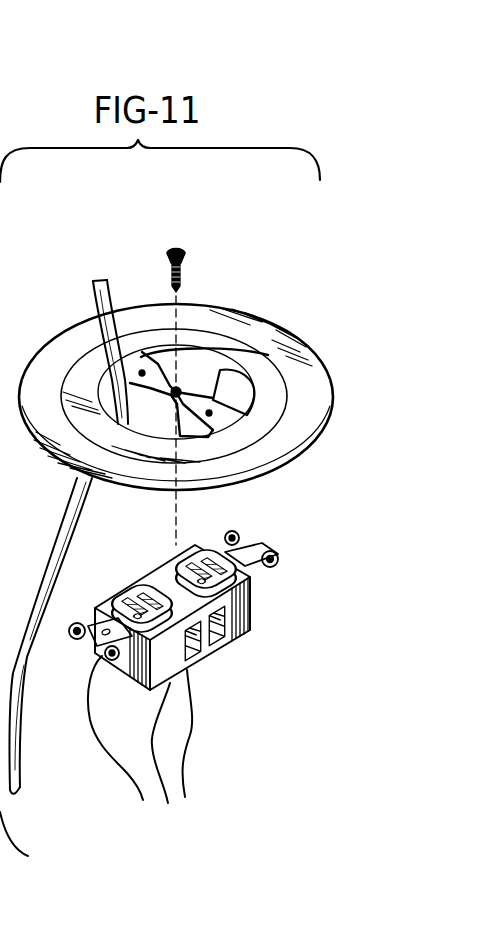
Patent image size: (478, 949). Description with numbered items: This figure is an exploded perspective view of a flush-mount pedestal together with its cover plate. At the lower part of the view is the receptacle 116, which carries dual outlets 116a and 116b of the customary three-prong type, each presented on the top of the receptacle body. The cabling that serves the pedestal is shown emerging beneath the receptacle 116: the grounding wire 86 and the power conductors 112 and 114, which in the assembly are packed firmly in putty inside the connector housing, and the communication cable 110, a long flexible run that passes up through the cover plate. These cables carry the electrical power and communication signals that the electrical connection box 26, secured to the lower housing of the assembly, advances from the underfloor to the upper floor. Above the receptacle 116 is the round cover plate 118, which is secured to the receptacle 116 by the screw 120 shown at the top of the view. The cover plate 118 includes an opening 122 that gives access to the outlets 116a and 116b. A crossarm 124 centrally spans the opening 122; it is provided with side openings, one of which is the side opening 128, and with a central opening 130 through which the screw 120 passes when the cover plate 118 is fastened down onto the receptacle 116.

The electrical connection box 26 is at (140, 373).
The grounding wire 86 is at (130, 777).
The communication cable 110 is at (13, 758).
The power conductor 112 is at (167, 710).
The power conductor 114 is at (192, 742).
The receptacle 116 is at (263, 603).
The outlet 116a is at (140, 580).
The outlet 116b is at (207, 542).
The cover plate 118 is at (238, 306).
The screw 120 is at (181, 251).
The opening 122 is at (133, 427).
The crossarm 124 is at (240, 370).
The side opening 128 is at (210, 413).
The central opening 130 is at (178, 389).